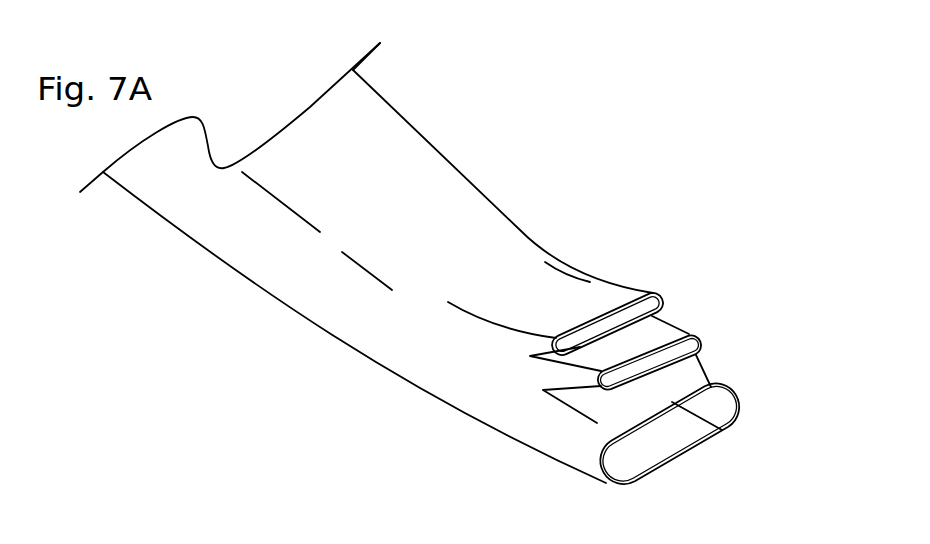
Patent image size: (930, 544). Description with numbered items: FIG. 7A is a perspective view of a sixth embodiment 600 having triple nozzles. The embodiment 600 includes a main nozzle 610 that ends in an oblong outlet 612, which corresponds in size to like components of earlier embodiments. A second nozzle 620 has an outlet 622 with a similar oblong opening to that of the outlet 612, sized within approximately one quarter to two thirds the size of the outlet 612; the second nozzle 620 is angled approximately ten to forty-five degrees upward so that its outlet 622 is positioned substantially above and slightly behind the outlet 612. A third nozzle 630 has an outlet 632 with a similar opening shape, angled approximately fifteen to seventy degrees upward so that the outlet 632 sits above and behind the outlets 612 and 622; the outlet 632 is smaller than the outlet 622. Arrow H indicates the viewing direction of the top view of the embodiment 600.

The sixth embodiment 600 is at (315, 103).
The main nozzle 610 is at (308, 313).
The oblong outlet 612 is at (740, 408).
The second nozzle 620 is at (572, 378).
The outlet 622 is at (708, 340).
The third nozzle 630 is at (598, 293).
The outlet 632 is at (665, 300).
The arrow H is at (570, 194).